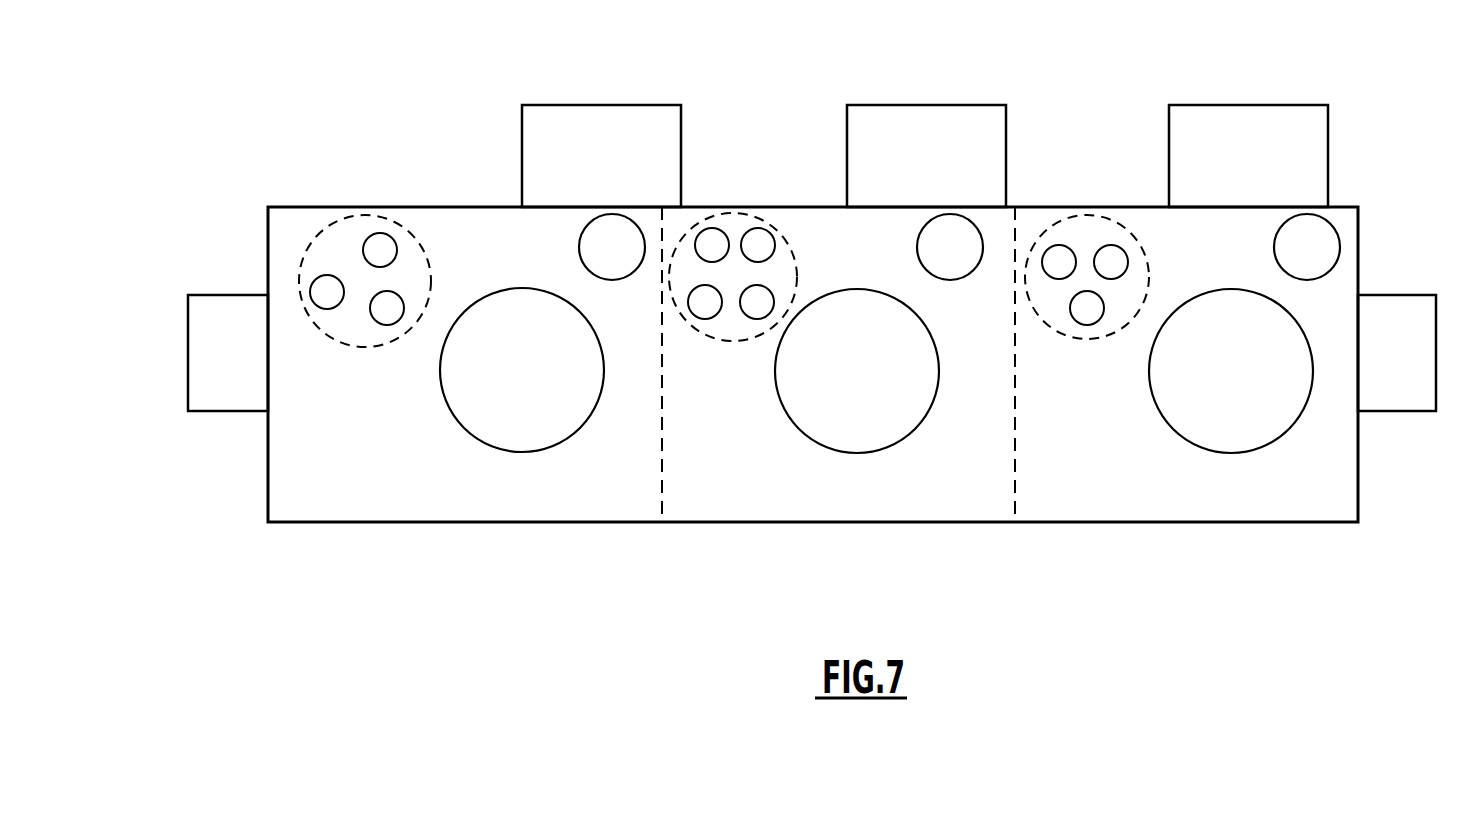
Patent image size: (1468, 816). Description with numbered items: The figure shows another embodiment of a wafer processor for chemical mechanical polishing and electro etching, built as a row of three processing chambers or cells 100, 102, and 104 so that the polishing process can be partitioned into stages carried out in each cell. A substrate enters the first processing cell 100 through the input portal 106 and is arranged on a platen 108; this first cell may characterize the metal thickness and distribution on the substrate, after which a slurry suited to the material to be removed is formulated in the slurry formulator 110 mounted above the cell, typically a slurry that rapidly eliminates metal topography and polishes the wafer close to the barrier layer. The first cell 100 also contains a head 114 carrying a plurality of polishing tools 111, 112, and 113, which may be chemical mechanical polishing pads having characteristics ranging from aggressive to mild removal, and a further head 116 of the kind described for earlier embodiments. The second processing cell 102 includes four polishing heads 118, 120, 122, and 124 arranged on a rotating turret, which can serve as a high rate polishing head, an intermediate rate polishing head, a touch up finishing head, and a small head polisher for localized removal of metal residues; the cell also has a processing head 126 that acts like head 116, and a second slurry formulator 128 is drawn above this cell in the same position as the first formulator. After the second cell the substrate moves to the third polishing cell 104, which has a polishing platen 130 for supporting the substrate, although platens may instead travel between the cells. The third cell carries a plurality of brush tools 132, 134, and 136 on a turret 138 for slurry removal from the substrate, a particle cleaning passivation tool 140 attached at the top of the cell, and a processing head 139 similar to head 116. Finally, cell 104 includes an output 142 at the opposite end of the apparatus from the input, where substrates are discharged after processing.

The first processing chamber 100 is at (467, 513).
The second processing cell 102 is at (768, 513).
The third polishing cell 104 is at (1088, 513).
The input portal 106 is at (236, 295).
The platen 108 is at (538, 428).
The slurry formulator 110 is at (568, 105).
The polishing tool 111 is at (383, 242).
The polishing tool 112 is at (383, 320).
The polishing tool 113 is at (325, 303).
The head 114 is at (327, 230).
The head 116 is at (580, 247).
The polishing head 118 is at (710, 228).
The polishing head 120 is at (753, 228).
The polishing head 122 is at (765, 288).
The polishing head 124 is at (690, 317).
The processing head 126 is at (937, 276).
The slurry formulator 128 is at (915, 105).
The polishing platen 130 is at (1173, 416).
The brush tool 132 is at (1100, 307).
The brush tool 134 is at (1103, 248).
The brush tool 136 is at (1045, 272).
The turret 138 is at (1055, 227).
The processing head 139 is at (1330, 247).
The particle cleaning passivation tool 140 is at (1309, 129).
The output 142 is at (1380, 415).